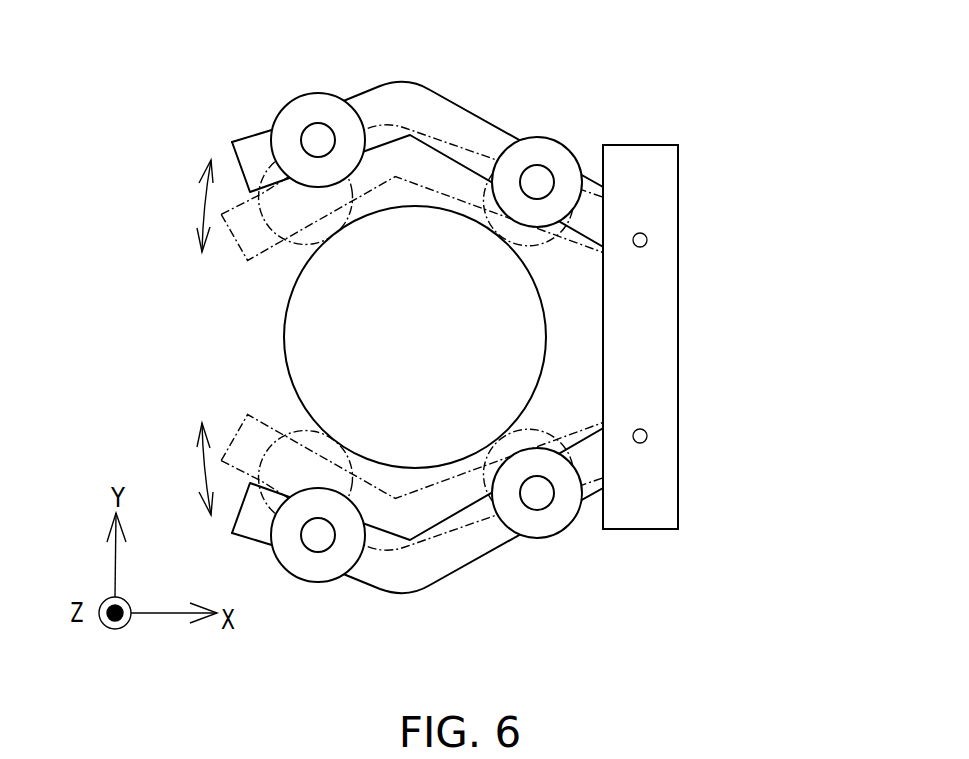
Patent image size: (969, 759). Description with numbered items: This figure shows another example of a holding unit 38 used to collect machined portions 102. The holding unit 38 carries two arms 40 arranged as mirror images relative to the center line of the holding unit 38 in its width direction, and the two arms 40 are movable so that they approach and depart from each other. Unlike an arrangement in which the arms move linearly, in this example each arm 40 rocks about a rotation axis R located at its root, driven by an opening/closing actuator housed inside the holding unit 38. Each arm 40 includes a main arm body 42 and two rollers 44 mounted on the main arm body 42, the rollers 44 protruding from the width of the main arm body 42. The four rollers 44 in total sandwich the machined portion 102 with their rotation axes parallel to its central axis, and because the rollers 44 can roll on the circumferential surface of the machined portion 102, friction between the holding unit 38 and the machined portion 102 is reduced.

The holding unit 38 is at (693, 308).
The arm 40 is at (585, 92).
The main arm body 42 is at (448, 128).
The roller 44 is at (292, 123).
The machined portion 102 is at (393, 347).
The rotation axis R is at (647, 237).